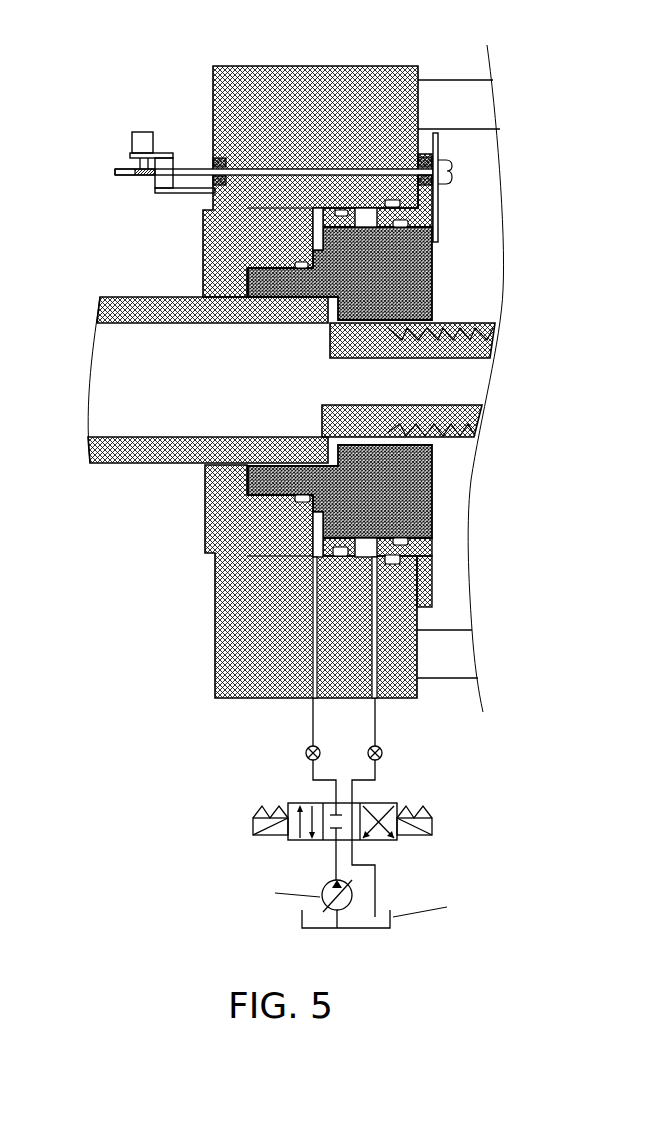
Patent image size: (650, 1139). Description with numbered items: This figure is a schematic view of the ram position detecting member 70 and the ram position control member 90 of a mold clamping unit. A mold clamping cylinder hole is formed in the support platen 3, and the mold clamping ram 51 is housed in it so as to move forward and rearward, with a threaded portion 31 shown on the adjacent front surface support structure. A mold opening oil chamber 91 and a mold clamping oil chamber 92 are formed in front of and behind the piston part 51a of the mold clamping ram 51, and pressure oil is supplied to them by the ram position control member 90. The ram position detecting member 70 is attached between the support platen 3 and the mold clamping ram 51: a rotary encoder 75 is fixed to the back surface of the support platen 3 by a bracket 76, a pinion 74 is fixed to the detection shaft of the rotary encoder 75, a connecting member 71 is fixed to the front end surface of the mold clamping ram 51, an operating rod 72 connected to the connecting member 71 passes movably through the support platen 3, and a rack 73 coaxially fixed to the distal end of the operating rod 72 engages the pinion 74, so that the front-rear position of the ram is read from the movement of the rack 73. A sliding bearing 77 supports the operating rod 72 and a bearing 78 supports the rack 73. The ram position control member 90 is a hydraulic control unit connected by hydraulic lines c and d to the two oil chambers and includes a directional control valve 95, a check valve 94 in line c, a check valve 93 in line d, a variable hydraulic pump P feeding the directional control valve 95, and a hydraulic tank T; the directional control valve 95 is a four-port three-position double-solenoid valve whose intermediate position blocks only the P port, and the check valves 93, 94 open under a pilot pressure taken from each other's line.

The support platen 3 is at (375, 66).
The threaded sleeve 31 is at (463, 318).
The mold clamping ram 51 is at (436, 255).
The piston part 51a is at (347, 708).
The ram position detecting member 70 is at (124, 161).
The connecting member 71 is at (438, 208).
The operating rod 72 is at (258, 168).
The rack 73 is at (115, 168).
The pinion 74 is at (133, 176).
The rotary encoder 75 is at (141, 132).
The bracket 76 is at (200, 193).
The sliding bearing 77 is at (216, 158).
The bearing 78 is at (155, 187).
The ram position control member 90 is at (297, 813).
The mold opening oil chamber 91 is at (427, 580).
The mold clamping oil chamber 92 is at (214, 612).
The check valve 93 is at (383, 752).
The check valve 94 is at (305, 752).
The directional control valve 95 is at (255, 829).